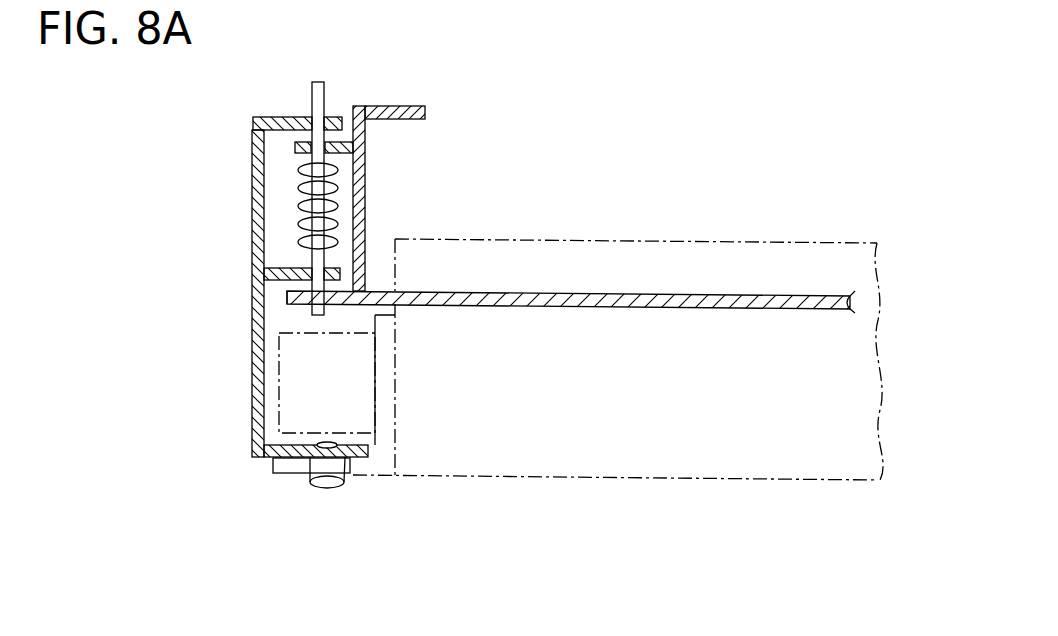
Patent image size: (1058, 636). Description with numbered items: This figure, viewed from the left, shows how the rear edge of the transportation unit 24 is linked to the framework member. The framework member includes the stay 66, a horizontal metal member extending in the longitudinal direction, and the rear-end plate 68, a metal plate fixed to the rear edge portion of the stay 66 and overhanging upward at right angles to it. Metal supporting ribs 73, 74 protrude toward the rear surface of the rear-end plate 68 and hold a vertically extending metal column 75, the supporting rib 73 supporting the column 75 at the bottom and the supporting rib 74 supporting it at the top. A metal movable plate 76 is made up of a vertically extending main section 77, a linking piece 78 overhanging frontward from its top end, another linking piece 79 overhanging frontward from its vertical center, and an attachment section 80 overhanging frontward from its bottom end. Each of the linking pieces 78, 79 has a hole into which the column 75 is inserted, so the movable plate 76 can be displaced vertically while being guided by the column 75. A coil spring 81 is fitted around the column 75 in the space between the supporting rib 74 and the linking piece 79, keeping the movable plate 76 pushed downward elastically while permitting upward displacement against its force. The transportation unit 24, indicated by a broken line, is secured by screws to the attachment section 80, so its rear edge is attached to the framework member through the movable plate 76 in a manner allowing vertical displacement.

The transportation unit 24 is at (685, 450).
The stay 66 is at (707, 295).
The rear-end plate 68 is at (365, 233).
The supporting rib 73 is at (287, 293).
The supporting rib 74 is at (365, 128).
The column 75 is at (328, 92).
The movable plate 76 is at (173, 132).
The main section 77 is at (253, 198).
The linking piece 78 is at (283, 132).
The linking piece 79 is at (295, 268).
The attachment section 80 is at (293, 453).
The coil spring 81 is at (363, 192).